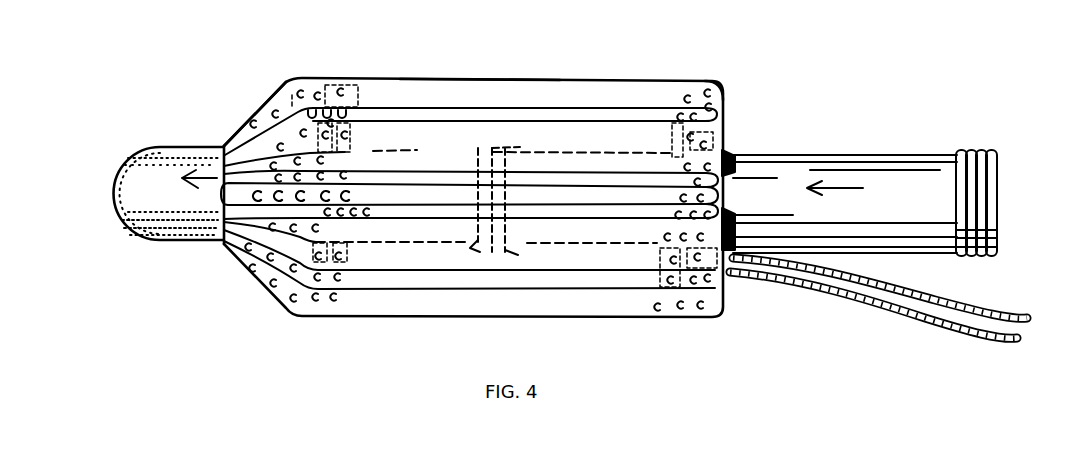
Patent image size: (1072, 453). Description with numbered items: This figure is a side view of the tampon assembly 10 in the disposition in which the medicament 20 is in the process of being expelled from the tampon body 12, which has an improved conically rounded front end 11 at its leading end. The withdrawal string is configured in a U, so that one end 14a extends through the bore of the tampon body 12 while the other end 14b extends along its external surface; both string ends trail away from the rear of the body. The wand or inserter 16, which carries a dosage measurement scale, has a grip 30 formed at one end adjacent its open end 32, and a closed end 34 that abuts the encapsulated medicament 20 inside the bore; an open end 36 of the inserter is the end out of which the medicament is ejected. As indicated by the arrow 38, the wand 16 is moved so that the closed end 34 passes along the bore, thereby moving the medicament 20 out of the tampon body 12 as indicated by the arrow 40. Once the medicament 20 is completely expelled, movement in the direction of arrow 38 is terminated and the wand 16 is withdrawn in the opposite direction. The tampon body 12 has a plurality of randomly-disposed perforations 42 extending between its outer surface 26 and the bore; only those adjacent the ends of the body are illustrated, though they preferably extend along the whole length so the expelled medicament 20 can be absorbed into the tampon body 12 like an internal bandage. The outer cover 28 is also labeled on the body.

The tampon assembly 10 is at (394, 63).
The conically rounded front end 11 is at (258, 100).
The tampon body 12 is at (585, 74).
The withdrawal string end 14a is at (903, 292).
The withdrawal string end 14b is at (888, 320).
The wand or inserter 16 is at (823, 154).
The medicament 20 is at (178, 241).
The outer surface 26 is at (726, 97).
The outer cover 28 is at (453, 79).
The grip 30 is at (974, 152).
The open end 32 is at (1002, 194).
The closed end 34 is at (476, 151).
The open end 36 is at (513, 149).
The arrow 38 is at (840, 189).
The arrow 40 is at (216, 178).
The perforations 42 is at (316, 95).